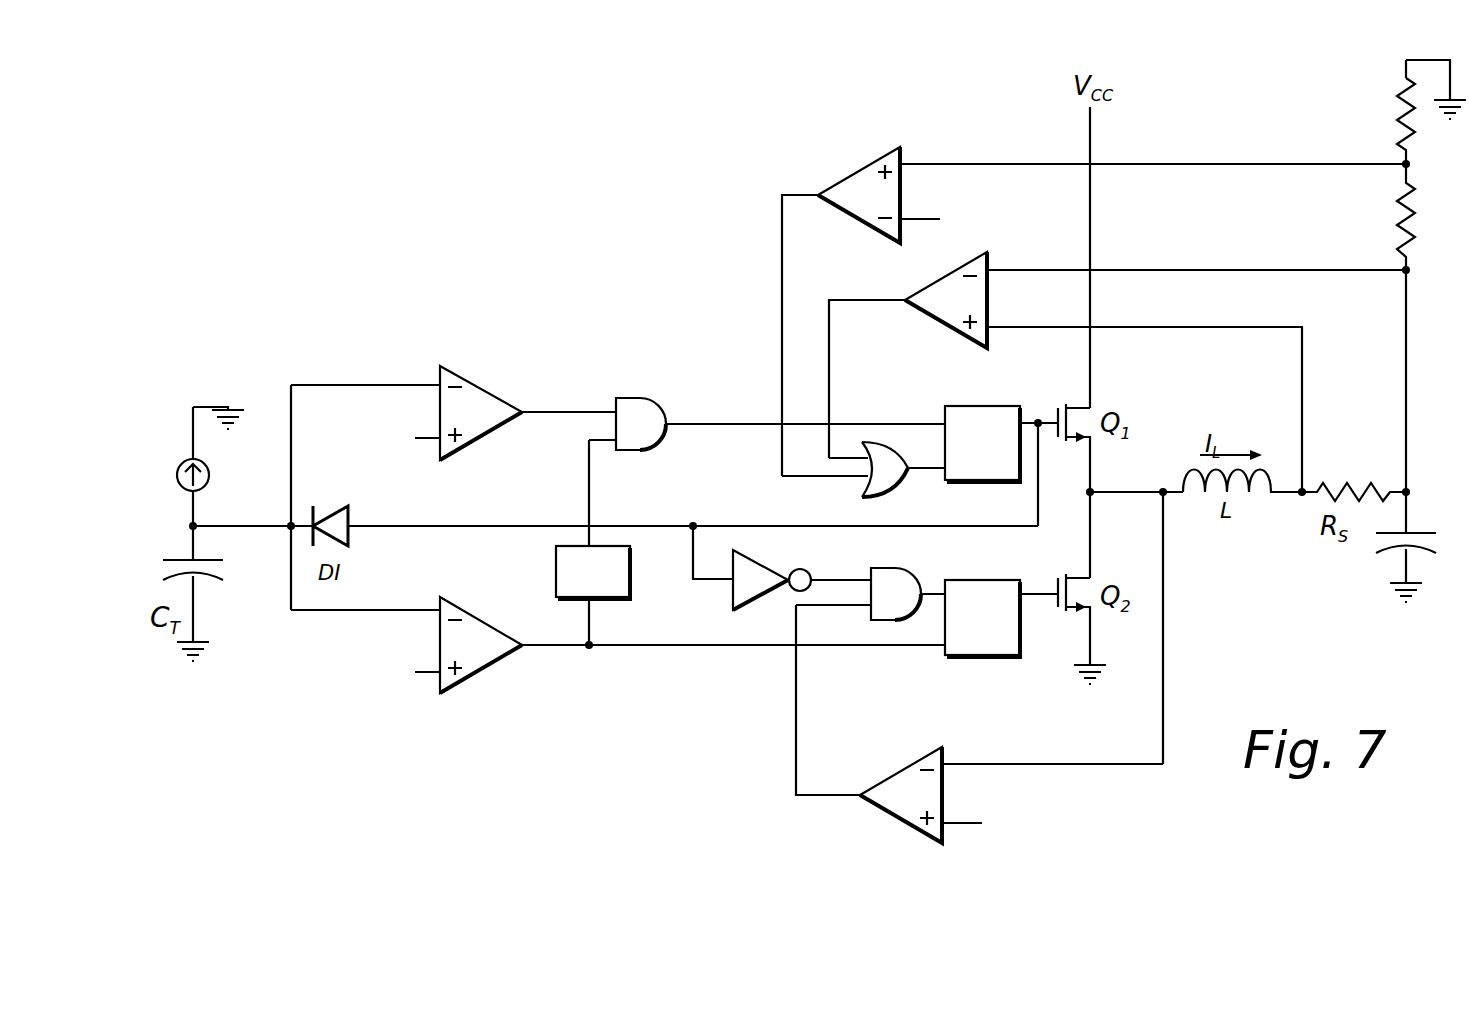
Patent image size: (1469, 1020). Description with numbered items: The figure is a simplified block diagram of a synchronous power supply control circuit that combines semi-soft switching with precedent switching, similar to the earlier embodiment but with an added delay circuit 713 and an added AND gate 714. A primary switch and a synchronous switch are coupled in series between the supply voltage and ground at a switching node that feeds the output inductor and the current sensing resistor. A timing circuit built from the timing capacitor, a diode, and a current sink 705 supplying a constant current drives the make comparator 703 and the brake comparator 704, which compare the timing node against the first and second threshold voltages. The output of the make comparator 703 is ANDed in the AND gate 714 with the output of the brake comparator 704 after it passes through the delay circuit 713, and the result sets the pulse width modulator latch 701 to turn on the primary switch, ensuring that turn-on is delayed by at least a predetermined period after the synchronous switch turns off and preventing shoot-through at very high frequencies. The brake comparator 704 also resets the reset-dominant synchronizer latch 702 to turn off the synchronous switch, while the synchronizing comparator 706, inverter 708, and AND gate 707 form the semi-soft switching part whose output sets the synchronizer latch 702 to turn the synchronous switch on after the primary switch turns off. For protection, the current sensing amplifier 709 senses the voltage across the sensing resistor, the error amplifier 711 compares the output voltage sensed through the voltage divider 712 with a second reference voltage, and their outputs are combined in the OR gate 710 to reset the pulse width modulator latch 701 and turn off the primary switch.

The PWM latch 701 is at (958, 480).
The SYNC latch 702 is at (968, 655).
The MAKE comparator 703 is at (490, 425).
The BRAKE comparator 704 is at (490, 655).
The current sink 705 is at (178, 468).
The SYNC comparator 706 is at (894, 806).
The AND gate 707 is at (915, 570).
The inverter 708 is at (757, 563).
The current sensing amplifier 709 is at (926, 312).
The OR gate 710 is at (906, 440).
The error amplifier 711 is at (849, 214).
The voltage divider 712 is at (1318, 224).
The delay circuit 713 is at (632, 568).
The AND gate 714 is at (670, 398).